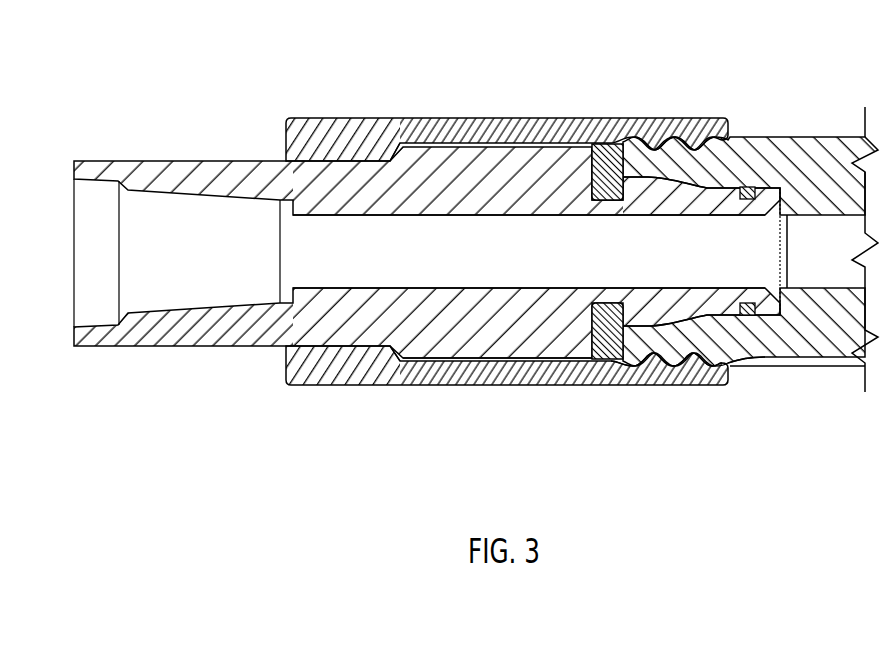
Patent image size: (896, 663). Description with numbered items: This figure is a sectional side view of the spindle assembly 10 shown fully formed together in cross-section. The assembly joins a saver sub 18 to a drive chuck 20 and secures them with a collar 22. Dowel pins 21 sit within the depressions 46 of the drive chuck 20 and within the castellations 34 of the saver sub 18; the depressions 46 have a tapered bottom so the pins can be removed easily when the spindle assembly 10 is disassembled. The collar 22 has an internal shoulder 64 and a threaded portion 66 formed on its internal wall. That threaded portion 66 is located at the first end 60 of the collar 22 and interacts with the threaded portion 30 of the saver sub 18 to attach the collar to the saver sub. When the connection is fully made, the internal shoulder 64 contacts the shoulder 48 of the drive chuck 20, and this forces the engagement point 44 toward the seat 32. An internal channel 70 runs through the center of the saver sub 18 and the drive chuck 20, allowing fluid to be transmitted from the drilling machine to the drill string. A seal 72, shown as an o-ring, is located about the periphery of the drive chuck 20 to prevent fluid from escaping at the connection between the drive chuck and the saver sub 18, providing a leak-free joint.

The spindle assembly 10 is at (228, 60).
The saver sub 18 is at (748, 140).
The drive chuck 20 is at (504, 153).
The dowel pins 21 is at (594, 355).
The collar 22 is at (452, 118).
The threaded portion 30 is at (702, 370).
The seat 32 is at (640, 380).
The castellations 34 is at (627, 143).
The engagement point 44 is at (593, 148).
The depressions 46 is at (562, 356).
The shoulder 48 is at (392, 358).
The first end 60 is at (730, 382).
The internal shoulder 64 is at (395, 158).
The threaded portion 66 is at (698, 140).
The internal channel 70 is at (507, 272).
The seal 72 is at (757, 317).